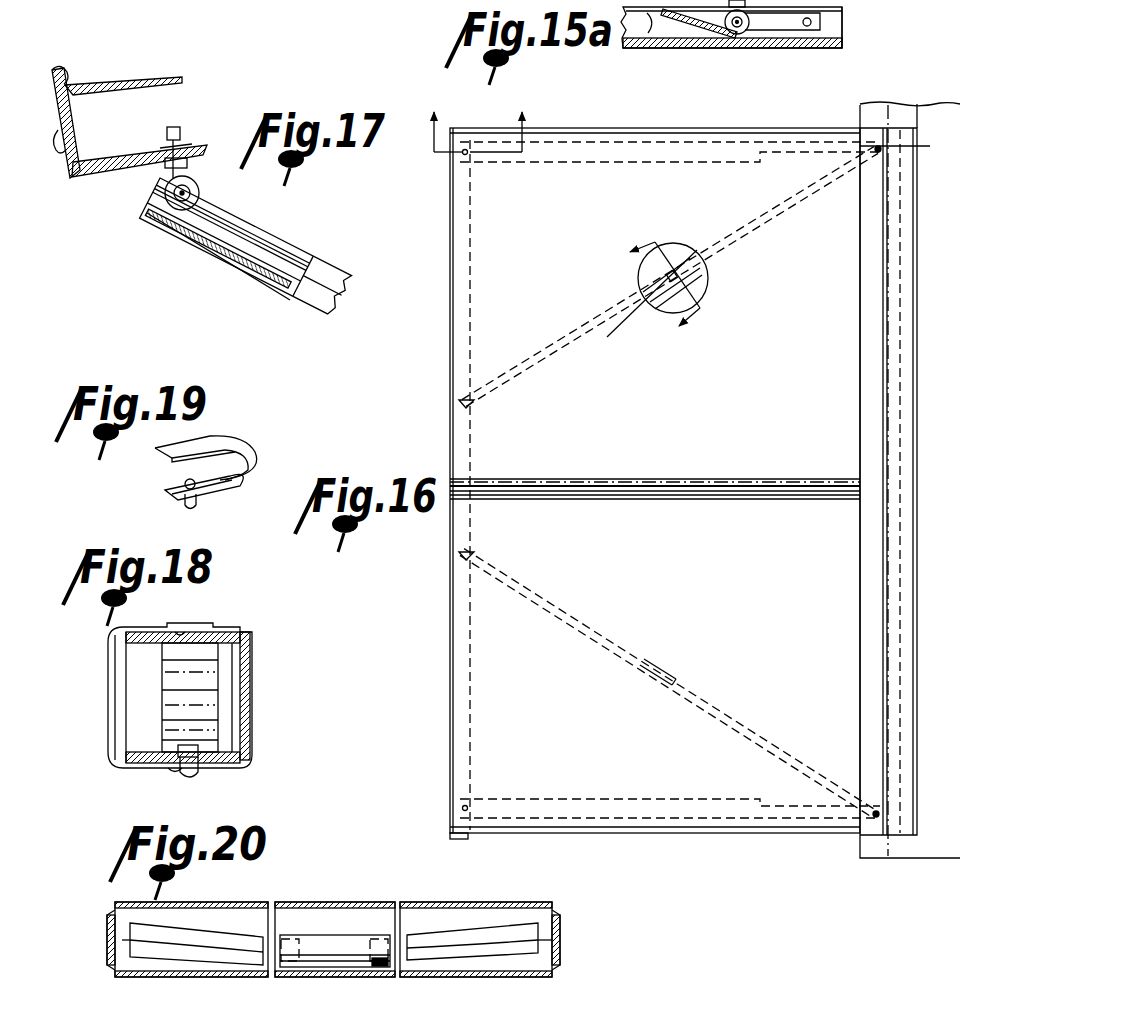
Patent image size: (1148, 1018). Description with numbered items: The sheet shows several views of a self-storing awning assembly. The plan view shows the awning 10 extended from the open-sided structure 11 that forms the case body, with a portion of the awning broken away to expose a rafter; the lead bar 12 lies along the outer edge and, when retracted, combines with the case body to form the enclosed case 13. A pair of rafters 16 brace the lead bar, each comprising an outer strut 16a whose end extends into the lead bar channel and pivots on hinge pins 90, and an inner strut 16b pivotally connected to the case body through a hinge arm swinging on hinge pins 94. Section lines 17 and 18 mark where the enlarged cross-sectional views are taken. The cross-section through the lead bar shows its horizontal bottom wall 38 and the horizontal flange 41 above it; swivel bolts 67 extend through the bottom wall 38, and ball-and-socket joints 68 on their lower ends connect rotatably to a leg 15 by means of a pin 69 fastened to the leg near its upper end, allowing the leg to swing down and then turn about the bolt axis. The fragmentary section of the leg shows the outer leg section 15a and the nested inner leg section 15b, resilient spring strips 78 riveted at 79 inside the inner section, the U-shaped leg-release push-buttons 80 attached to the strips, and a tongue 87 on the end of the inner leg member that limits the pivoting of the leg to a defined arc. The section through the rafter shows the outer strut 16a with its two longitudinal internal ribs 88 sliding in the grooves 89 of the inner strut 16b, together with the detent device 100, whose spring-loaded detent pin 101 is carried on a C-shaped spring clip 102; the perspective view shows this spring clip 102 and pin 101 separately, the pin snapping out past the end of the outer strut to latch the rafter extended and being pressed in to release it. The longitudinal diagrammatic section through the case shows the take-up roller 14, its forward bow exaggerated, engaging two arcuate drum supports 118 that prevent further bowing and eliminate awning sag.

In FIG. 16, the awning 10 is at (743, 450).
In FIG. 16, the open-sided structure 11 is at (866, 248).
In FIG. 17, the lead bar 12 is at (64, 72).
In FIG. 16, the lead bar 12 is at (482, 256).
In FIG. 20, the enclosed case 13 is at (440, 900).
In FIG. 20, the take-up roller 14 is at (328, 940).
In FIG. 17, the legs 15 is at (236, 292).
In FIG. 16, the legs 15 is at (584, 162).
In FIG. 15A, the outer leg section 15a is at (832, 60).
In FIG. 15A, the inner leg section 15b is at (842, 30).
In FIG. 18, the rafters 16 is at (270, 622).
In FIG. 16, the rafters 16 is at (675, 254).
In FIG. 18, the outer strut 16a is at (108, 682).
In FIG. 16, the outer strut 16a is at (596, 626).
In FIG. 18, the inner strut 16b is at (252, 690).
In FIG. 16, the inner strut 16b is at (700, 262).
In FIG. 16, the section line 17— 17 is at (483, 117).
In FIG. 16, the section line 18— 18 is at (649, 299).
In FIG. 17, the bottom wall 38 is at (95, 180).
In FIG. 17, the horizontal flange 41 is at (118, 82).
In FIG. 17, the swivel bolts 67 is at (176, 126).
In FIG. 17, the ball-and-socket joints 68 is at (166, 232).
In FIG. 17, the pin 69 is at (200, 186).
In FIG. 15A, the resilient spring strips 78 is at (788, 33).
In FIG. 15A, the rivets 79 is at (812, 20).
In FIG. 15A, the leg-release push-buttons 80 is at (738, 36).
In FIG. 15A, the tongue 87 is at (678, 38).
In FIG. 18, the internal ribs 88 is at (205, 635).
In FIG. 18, the grooves 89 is at (176, 637).
In FIG. 16, the hinge pins 90 is at (470, 404).
In FIG. 16, the hinge pins 94 is at (882, 149).
In FIG. 19, the detent devices 100 is at (242, 478).
In FIG. 18, the detent devices 100 is at (158, 724).
In FIG. 19, the detent pins 101 is at (198, 500).
In FIG. 16, the detent pins 101 is at (685, 282).
In FIG. 19, the C-shaped spring clips 102 is at (216, 440).
In FIG. 18, the C-shaped spring clips 102 is at (216, 676).
In FIG. 20, the arcuate drum supports 118 is at (288, 976).